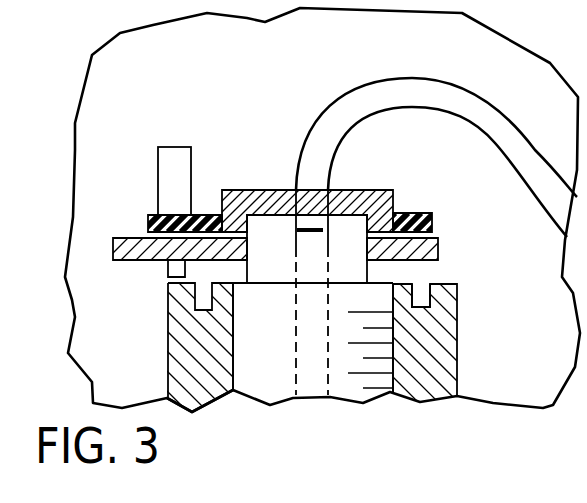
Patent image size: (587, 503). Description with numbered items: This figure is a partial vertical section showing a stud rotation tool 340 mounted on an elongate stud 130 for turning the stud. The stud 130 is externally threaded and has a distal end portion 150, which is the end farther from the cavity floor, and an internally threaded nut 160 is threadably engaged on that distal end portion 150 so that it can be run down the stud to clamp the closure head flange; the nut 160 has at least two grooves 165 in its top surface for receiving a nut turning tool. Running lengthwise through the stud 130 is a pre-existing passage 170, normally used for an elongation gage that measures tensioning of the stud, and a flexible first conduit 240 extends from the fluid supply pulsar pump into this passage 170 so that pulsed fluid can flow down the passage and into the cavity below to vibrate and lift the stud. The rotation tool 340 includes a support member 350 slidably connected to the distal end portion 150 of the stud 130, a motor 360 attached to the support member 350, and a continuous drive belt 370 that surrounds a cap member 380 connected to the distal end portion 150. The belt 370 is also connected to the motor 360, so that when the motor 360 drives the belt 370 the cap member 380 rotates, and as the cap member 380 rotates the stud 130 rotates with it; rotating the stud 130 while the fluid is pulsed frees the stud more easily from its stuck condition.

The elongate stud 130 is at (365, 331).
The distal end portion 150 is at (362, 372).
The internally threaded nut 160 is at (447, 284).
The grooves 165 is at (420, 284).
The passage 170 is at (215, 418).
The flexible first conduit 240 is at (435, 84).
The stud rotation tool 340 is at (203, 85).
The support member 350 is at (147, 262).
The motor 360 is at (175, 147).
The continuous drive belt 370 is at (148, 217).
The cap member 380 is at (268, 188).